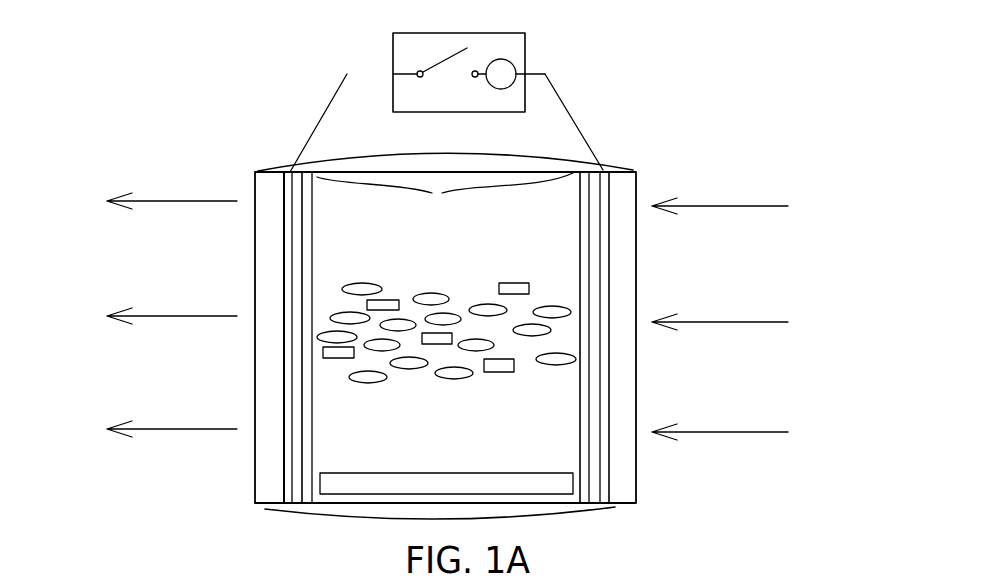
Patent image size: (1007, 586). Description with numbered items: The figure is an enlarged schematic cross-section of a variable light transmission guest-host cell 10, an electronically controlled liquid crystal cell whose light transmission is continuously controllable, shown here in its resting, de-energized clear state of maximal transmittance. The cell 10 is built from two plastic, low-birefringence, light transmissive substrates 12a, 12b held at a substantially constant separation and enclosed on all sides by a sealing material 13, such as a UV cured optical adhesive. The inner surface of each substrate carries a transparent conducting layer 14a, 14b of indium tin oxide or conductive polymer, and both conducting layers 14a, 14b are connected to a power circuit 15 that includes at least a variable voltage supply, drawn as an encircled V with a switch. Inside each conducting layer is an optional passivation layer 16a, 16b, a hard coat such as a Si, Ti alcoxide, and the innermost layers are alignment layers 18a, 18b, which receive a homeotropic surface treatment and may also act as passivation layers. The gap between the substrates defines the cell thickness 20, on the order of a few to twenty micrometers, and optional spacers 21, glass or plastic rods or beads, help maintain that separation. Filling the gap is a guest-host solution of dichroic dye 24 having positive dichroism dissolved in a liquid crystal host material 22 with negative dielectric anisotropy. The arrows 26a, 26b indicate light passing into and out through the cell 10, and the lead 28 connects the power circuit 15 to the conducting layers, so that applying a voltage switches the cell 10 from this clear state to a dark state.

The variable light transmission guest-host cell 10 is at (629, 91).
The substrate 12a is at (270, 472).
The substrate 12b is at (622, 477).
The sealing material 13 is at (392, 165).
The transparent conducting layer 14a is at (290, 505).
The transparent conducting layer 14b is at (587, 503).
The power circuit 15 is at (552, 43).
The passivation layer 16a is at (298, 505).
The passivation layer 16b is at (595, 505).
The alignment layer 18a is at (310, 505).
The alignment layer 18b is at (588, 505).
The cell thickness 20 is at (446, 196).
The spacers 21 is at (527, 480).
The liquid crystal host material 22 is at (360, 283).
The dichroic dye 24 is at (512, 283).
The inlet gas flow 26a is at (712, 320).
The outlet gas flow 26b is at (192, 315).
The lead wire 28 is at (430, 58).